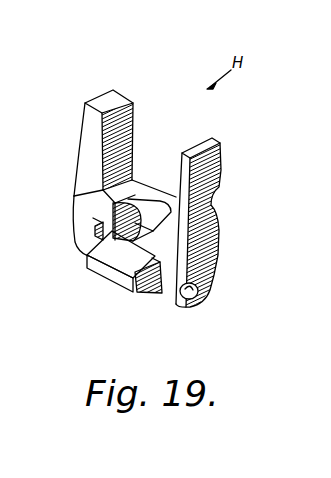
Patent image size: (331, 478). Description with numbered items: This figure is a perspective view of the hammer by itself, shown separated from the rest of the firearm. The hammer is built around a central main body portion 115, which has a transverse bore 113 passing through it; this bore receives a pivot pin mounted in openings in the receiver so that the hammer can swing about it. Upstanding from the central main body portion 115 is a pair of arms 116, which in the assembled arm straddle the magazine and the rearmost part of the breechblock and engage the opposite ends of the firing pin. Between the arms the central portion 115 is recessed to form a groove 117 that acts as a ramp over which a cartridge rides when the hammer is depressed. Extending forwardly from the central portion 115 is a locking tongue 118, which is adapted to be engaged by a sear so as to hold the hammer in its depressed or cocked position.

The transverse bore 113 is at (198, 289).
The central main body portion 115 is at (78, 208).
The arms 116 is at (85, 117).
The groove 117 is at (142, 212).
The locking tongue 118 is at (128, 271).